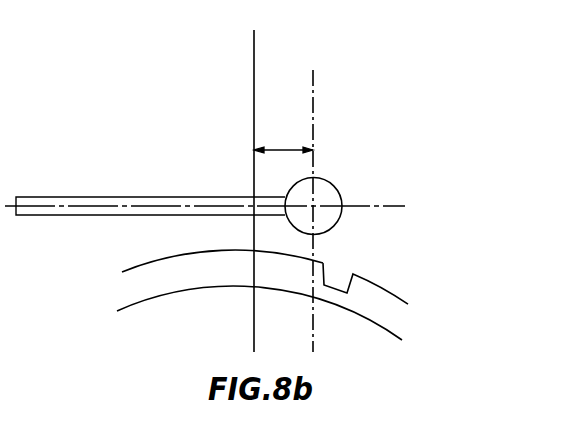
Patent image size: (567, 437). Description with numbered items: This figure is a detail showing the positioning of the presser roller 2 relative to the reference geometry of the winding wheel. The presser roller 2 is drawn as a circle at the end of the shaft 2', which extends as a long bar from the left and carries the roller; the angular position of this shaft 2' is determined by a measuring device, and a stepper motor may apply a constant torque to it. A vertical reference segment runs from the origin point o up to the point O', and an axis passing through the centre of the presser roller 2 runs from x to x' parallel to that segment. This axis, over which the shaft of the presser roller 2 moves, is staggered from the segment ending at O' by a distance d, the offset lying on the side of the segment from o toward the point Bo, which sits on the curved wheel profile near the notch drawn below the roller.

The presser roller 2 is at (327, 211).
The shaft 2' is at (150, 187).
The segment OO' endpoint O' is at (244, 186).
The axis XX' endpoint x' is at (322, 138).
The axis XX' endpoint x is at (324, 279).
The distance d is at (283, 136).
The point O o is at (222, 252).
The point Bo is at (365, 271).